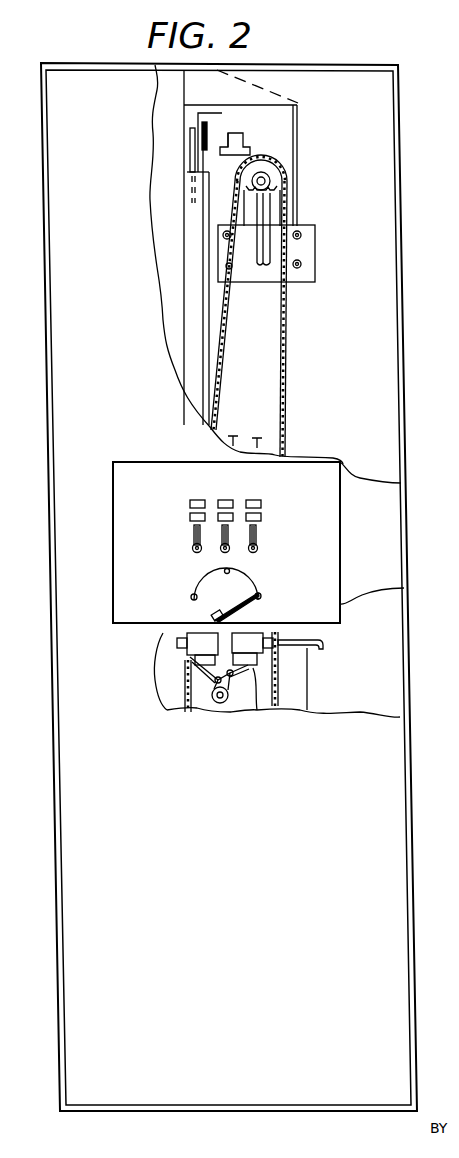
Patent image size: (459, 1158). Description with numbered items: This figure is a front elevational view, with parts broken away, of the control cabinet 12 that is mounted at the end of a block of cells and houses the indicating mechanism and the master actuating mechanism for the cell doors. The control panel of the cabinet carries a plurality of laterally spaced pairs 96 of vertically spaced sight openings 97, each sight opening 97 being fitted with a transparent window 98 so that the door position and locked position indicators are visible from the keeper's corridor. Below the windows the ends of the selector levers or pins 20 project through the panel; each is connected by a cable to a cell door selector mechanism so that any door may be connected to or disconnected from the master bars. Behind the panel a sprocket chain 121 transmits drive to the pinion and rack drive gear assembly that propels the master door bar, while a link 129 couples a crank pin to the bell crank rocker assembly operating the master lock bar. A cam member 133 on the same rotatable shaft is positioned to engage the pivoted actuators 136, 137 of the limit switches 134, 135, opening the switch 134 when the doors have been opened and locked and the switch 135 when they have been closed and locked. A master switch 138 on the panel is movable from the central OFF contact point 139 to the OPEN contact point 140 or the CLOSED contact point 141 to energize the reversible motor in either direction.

The control cabinet 12 is at (208, 587).
The selector lever or pin 20 is at (222, 552).
The pairs of sight openings 96 is at (268, 517).
The sight opening 97 is at (252, 499).
The transparent window 98 is at (200, 499).
The sprocket chain 121 is at (285, 377).
The link 129 is at (203, 333).
The cam member 133 is at (228, 708).
The limit switch 134 is at (263, 627).
The limit switch 135 is at (183, 628).
The pivoted actuator 136 is at (260, 707).
The pivoted actuator 137 is at (208, 707).
The master switch 138 is at (223, 607).
The central contact point 139 is at (240, 571).
The contact point 140 is at (263, 592).
The contact point 141 is at (190, 588).